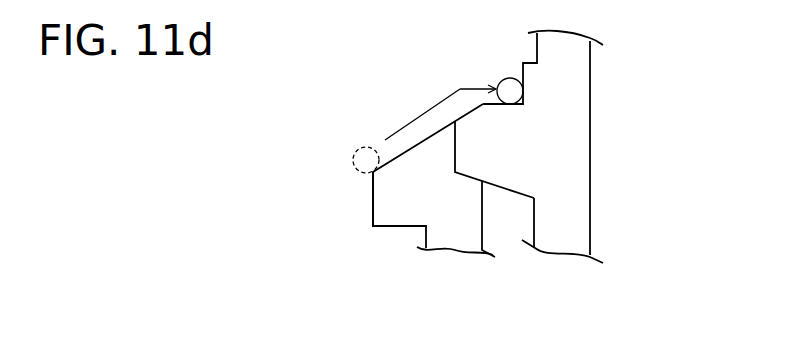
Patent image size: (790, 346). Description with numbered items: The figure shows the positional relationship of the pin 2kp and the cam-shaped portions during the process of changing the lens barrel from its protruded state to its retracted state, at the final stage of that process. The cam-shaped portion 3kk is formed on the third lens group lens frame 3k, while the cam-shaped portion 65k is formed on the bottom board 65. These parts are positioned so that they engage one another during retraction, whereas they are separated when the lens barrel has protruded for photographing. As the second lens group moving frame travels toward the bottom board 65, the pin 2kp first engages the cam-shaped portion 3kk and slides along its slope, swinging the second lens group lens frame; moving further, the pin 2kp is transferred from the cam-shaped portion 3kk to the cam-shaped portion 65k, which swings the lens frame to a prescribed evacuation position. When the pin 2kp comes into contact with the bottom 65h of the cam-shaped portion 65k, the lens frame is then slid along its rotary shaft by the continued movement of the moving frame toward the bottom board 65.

The bottom board 65 is at (573, 110).
The bottom of the cam-shaped portion 65h is at (517, 79).
The cam-shaped portion 65k is at (467, 113).
The pin 2kp is at (505, 87).
The cam-shaped portion 3kk is at (407, 153).
The third lens group lens frame 3k is at (454, 237).